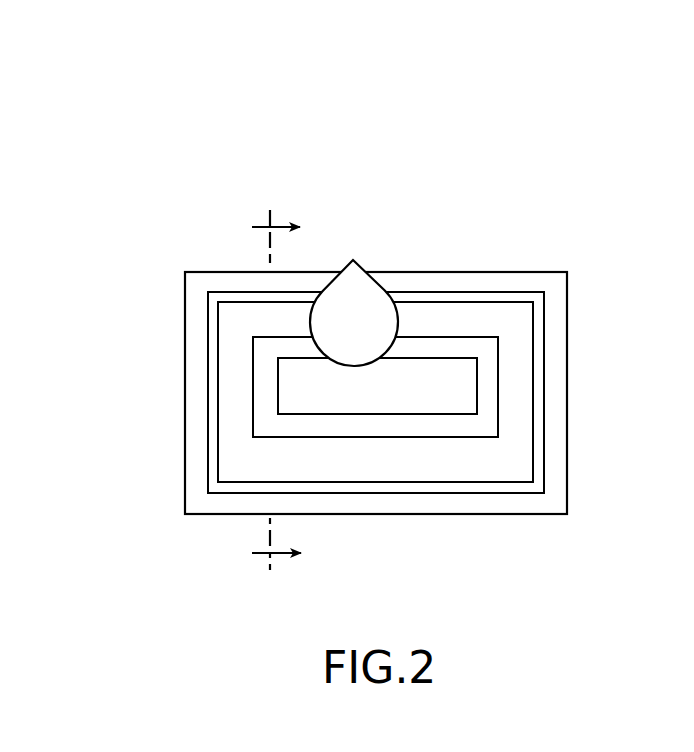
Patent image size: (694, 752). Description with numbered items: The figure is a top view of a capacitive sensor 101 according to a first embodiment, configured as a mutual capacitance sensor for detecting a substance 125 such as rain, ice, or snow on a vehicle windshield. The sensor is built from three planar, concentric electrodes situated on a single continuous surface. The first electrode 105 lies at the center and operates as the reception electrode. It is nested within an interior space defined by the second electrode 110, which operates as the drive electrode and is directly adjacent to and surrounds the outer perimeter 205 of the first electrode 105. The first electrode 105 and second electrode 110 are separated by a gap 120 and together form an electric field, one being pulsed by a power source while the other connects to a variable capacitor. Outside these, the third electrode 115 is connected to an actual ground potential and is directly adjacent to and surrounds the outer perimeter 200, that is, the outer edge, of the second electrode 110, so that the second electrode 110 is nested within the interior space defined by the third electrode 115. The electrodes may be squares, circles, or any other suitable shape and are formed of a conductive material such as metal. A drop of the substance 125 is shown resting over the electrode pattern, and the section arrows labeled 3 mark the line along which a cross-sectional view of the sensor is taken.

The capacitive sensor 101 is at (263, 136).
The third electrode 115 is at (488, 286).
The gap 120 is at (536, 297).
The second electrode 110 is at (518, 363).
The first electrode 105 is at (415, 397).
The substance 125 is at (357, 283).
The outer perimeter of the second electrode 200 is at (540, 335).
The outer perimeter of the first electrode 205 is at (481, 403).
The section line 3- 3 is at (276, 387).